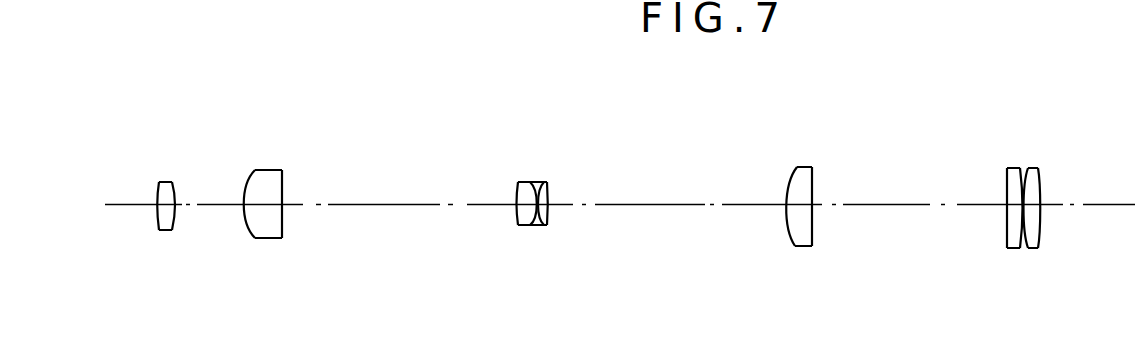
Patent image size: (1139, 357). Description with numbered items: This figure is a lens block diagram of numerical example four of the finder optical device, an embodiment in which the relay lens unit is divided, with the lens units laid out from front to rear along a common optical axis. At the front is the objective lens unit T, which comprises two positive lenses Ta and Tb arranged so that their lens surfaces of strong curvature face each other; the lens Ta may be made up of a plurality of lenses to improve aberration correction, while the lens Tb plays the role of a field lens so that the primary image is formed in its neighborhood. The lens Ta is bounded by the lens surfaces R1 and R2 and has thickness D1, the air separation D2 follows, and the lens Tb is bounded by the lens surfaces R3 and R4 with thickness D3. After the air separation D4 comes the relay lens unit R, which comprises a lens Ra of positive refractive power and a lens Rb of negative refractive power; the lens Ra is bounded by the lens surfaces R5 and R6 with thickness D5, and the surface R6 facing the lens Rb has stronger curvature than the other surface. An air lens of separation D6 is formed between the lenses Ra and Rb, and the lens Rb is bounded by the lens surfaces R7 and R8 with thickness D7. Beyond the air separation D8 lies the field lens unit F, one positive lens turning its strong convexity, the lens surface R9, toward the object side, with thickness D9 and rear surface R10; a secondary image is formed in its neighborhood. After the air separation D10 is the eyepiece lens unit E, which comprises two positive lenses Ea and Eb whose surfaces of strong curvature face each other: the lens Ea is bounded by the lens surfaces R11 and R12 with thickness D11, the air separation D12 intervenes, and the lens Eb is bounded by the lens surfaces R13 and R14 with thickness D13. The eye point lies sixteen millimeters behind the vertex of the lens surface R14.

The objective lens unit T is at (217, 161).
The positive lens Ta is at (165, 184).
The positive lens Tb is at (263, 184).
The relay lens unit R is at (533, 161).
The lens of positive refractive power Ra is at (507, 184).
The lens of negative refractive power Rb is at (556, 184).
The field lens unit F is at (800, 179).
The eyepiece lens unit E is at (1018, 159).
The positive lens Ea is at (991, 180).
The positive lens Eb is at (1048, 180).
The first lens surface R1 is at (149, 168).
The second lens surface R2 is at (178, 168).
The third lens surface R3 is at (244, 172).
The fourth lens surface R4 is at (282, 172).
The fifth lens surface R5 is at (499, 166).
The sixth lens surface R6 is at (523, 166).
The seventh lens surface R7 is at (545, 166).
The eighth lens surface R8 is at (565, 166).
The ninth lens surface R9 is at (786, 171).
The tenth lens surface R10 is at (813, 171).
The eleventh lens surface R11 is at (988, 176).
The twelfth lens surface R12 is at (1006, 166).
The thirteenth lens surface R13 is at (1033, 176).
The fourteenth lens surface R14 is at (1052, 166).
The first lens thickness D1 is at (165, 252).
The second air separation D2 is at (215, 252).
The third lens thickness D3 is at (268, 253).
The fourth air separation D4 is at (378, 252).
The fifth lens thickness D5 is at (506, 252).
The sixth air separation D6 is at (532, 264).
The seventh lens thickness D7 is at (561, 262).
The eighth air separation D8 is at (662, 252).
The ninth lens thickness D9 is at (807, 253).
The tenth air separation D10 is at (895, 252).
The eleventh lens thickness D11 is at (994, 282).
The twelfth air separation D12 is at (1022, 282).
The thirteenth lens thickness D13 is at (1056, 282).